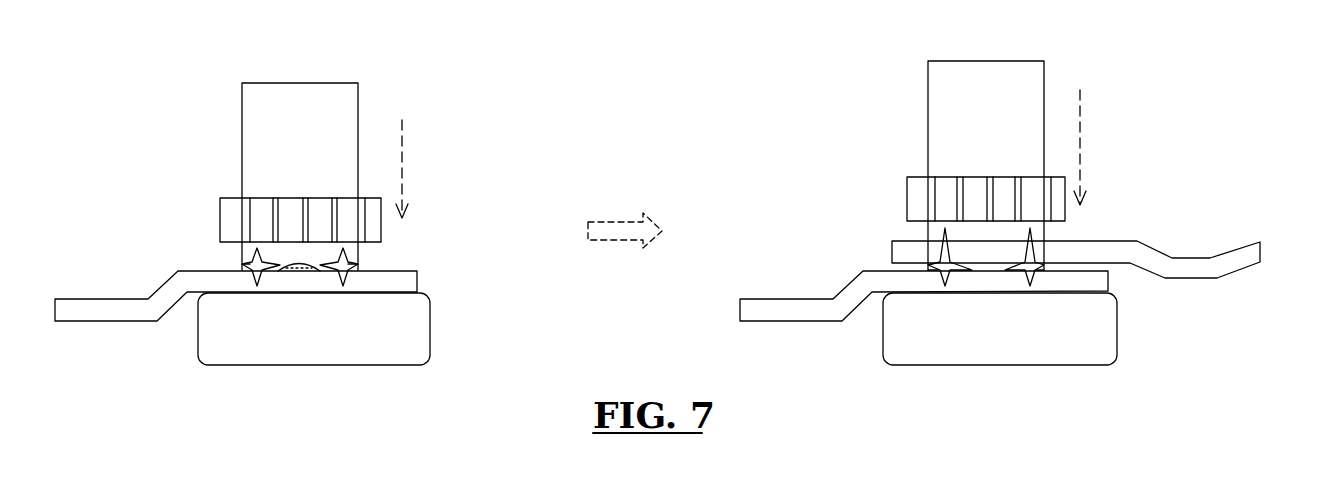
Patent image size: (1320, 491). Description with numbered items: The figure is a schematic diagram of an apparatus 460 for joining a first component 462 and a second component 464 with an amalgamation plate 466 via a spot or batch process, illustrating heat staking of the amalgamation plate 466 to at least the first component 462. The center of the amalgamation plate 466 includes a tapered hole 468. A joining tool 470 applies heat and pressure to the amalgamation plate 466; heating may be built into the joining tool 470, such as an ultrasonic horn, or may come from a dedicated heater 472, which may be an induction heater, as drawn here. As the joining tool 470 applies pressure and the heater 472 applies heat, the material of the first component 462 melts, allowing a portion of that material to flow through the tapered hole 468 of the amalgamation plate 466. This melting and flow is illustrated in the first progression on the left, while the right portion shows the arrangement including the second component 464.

The apparatus 460 is at (416, 88).
The first component 462 is at (92, 307).
The second component 464 is at (1203, 265).
The amalgamation plate 466 is at (353, 266).
The tapered hole 468 is at (297, 272).
The joining tool 470 is at (258, 127).
The heater 472 is at (222, 219).